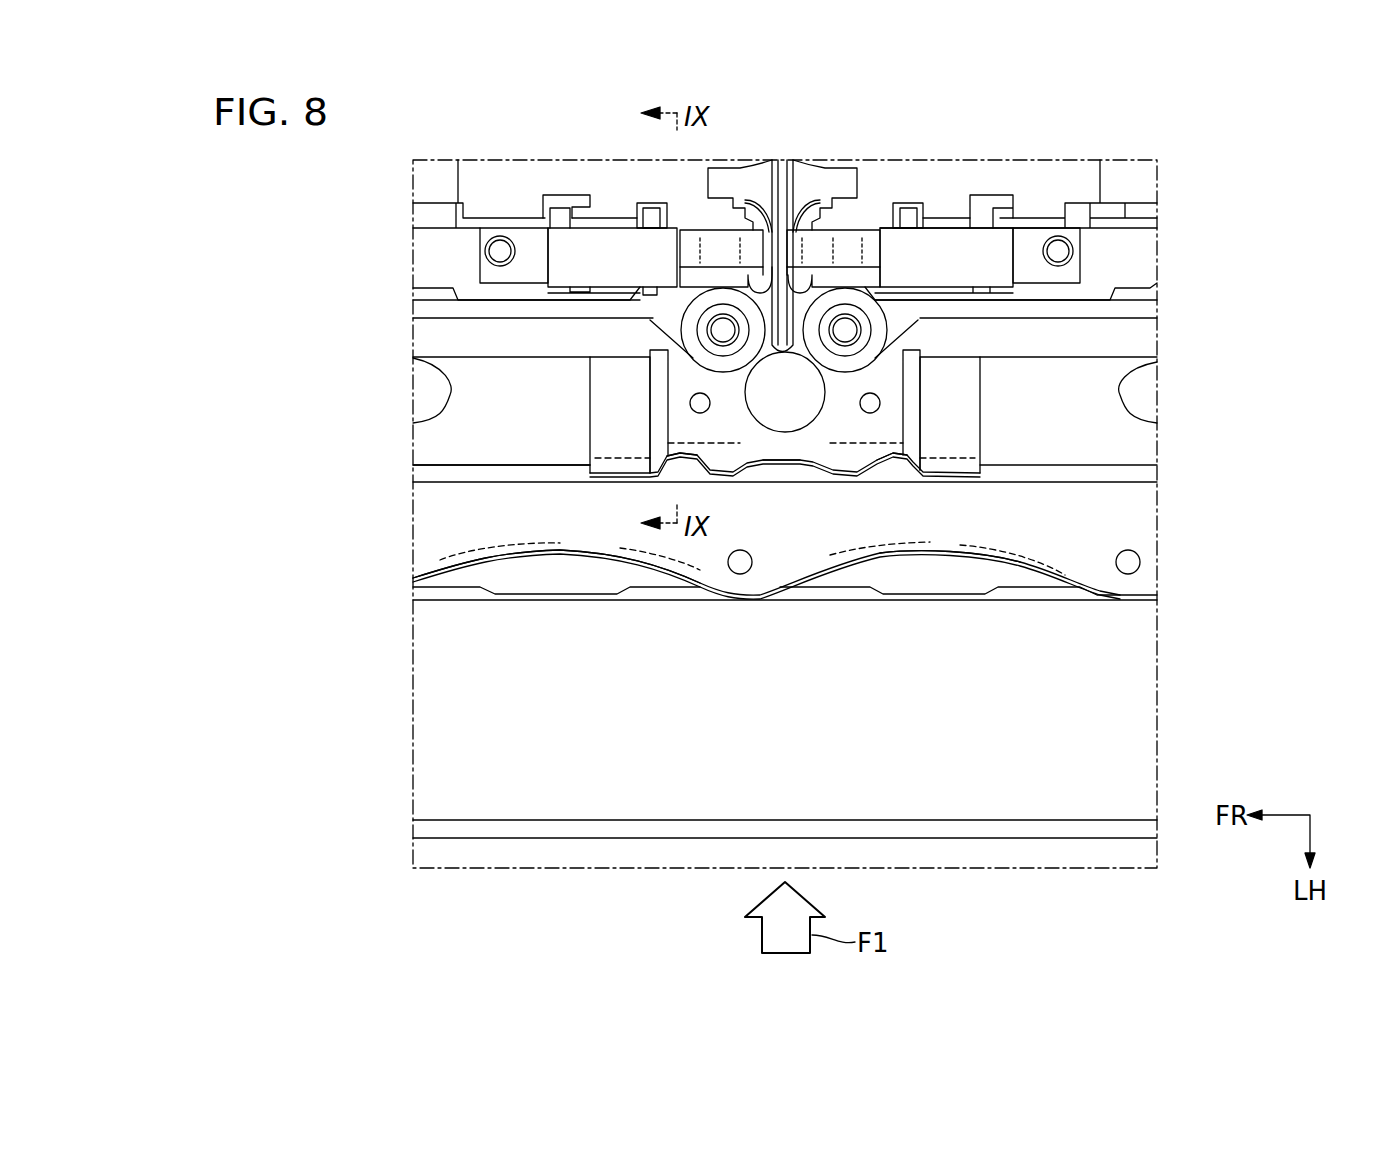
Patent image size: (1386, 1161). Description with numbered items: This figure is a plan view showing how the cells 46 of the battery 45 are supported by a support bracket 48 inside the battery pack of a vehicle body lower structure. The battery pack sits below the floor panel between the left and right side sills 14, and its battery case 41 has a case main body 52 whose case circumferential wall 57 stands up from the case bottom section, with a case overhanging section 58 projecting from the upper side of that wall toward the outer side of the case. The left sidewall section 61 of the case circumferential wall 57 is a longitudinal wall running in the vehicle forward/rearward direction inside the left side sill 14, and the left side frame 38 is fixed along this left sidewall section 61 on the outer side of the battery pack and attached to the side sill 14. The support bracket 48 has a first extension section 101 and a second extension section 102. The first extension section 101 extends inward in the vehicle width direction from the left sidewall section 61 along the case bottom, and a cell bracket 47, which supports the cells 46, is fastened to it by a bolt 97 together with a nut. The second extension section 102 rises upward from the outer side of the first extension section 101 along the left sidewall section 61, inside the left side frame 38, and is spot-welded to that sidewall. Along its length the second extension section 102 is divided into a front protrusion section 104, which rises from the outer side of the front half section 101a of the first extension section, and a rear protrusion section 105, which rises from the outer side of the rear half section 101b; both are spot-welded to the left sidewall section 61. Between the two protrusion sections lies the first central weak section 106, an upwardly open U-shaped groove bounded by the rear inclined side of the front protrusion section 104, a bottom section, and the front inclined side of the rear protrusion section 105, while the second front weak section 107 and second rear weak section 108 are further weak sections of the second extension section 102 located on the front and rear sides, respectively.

The side sill 14 is at (647, 752).
The left side frame 38 is at (543, 572).
The battery case 41 is at (501, 647).
The battery 45 is at (496, 162).
The cell 46 is at (555, 172).
The cell bracket 47 is at (670, 316).
The support bracket 48 is at (933, 299).
The case main body 52 is at (673, 577).
The case circumferential wall 57 is at (446, 453).
The case overhanging section 58 is at (992, 532).
The left sidewall section 61 is at (503, 475).
The bolt 97 is at (844, 323).
The first extension section 101 is at (978, 382).
The front half section 101a is at (698, 383).
The rear half section 101b is at (870, 383).
The second extension section 102 is at (962, 460).
The front protrusion section 104 is at (620, 463).
The rear protrusion section 105 is at (945, 458).
The first central weak section 106 is at (785, 478).
The second front weak section 107 is at (690, 443).
The second rear weak section 108 is at (887, 450).